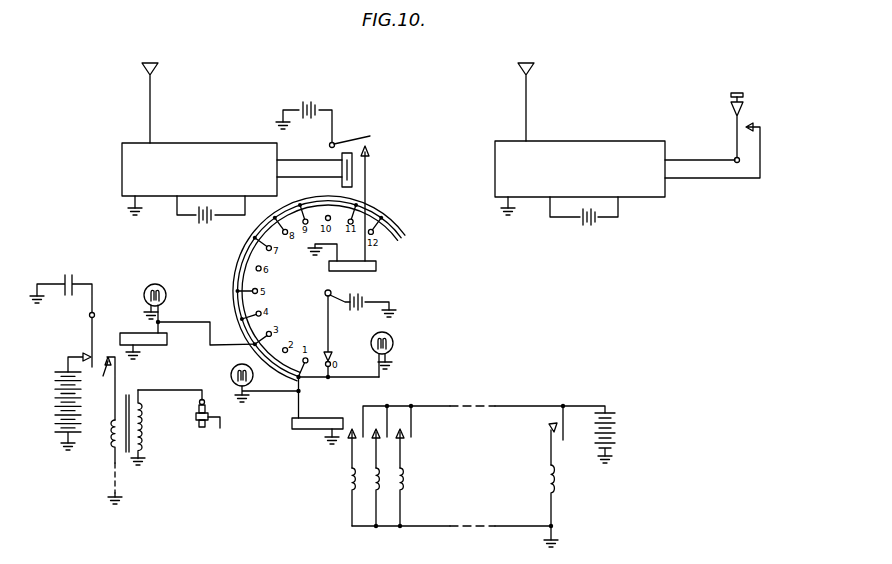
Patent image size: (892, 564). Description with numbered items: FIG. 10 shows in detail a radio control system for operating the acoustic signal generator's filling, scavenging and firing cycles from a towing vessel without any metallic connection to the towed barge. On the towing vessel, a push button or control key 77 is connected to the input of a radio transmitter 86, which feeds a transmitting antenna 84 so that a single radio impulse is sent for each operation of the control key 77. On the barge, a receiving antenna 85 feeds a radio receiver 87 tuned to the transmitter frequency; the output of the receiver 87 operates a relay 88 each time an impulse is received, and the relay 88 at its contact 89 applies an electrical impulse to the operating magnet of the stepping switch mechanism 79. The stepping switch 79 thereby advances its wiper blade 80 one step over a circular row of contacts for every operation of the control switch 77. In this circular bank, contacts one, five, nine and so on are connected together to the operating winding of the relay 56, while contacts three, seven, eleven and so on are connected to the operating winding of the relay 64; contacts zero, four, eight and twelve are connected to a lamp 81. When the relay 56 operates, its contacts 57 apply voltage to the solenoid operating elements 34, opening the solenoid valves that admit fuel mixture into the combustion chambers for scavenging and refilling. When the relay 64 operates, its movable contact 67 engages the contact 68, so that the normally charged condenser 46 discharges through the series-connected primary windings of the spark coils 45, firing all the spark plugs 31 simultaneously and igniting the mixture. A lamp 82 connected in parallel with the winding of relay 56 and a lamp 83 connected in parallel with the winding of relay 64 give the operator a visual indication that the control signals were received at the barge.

The spark plug 31 is at (212, 425).
The solenoid operating element 34 is at (556, 479).
The spark coil 45 is at (124, 406).
The condenser 46 is at (74, 284).
The relay 56 is at (311, 430).
The contacts 57 is at (556, 427).
The relay 64 is at (137, 333).
The movable contact 67 is at (92, 323).
The contact 68 is at (102, 388).
The push button or control key 77 is at (744, 119).
The stepping switch mechanism 79 is at (361, 272).
The wiper blade 80 is at (331, 331).
The lamp 81 is at (393, 344).
The lamp 82 is at (237, 367).
The lamp 83 is at (157, 285).
The transmitting antenna 84 is at (533, 70).
The receiving antenna 85 is at (156, 70).
The radio transmitter 86 is at (495, 168).
The radio receiver 87 is at (122, 171).
The relay 88 is at (355, 183).
The contact 89 is at (368, 152).